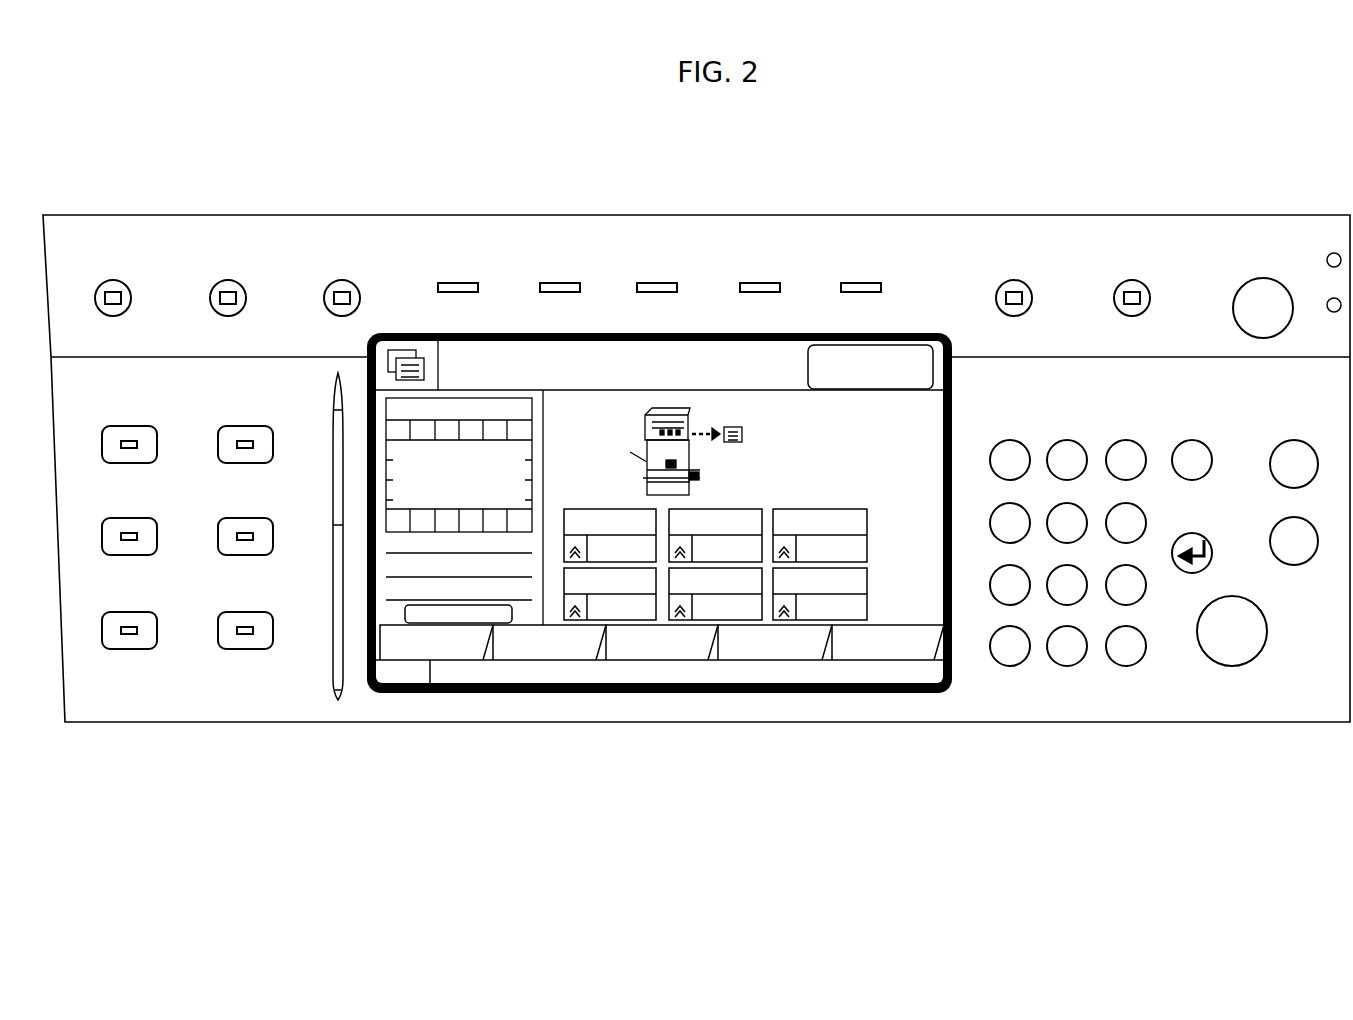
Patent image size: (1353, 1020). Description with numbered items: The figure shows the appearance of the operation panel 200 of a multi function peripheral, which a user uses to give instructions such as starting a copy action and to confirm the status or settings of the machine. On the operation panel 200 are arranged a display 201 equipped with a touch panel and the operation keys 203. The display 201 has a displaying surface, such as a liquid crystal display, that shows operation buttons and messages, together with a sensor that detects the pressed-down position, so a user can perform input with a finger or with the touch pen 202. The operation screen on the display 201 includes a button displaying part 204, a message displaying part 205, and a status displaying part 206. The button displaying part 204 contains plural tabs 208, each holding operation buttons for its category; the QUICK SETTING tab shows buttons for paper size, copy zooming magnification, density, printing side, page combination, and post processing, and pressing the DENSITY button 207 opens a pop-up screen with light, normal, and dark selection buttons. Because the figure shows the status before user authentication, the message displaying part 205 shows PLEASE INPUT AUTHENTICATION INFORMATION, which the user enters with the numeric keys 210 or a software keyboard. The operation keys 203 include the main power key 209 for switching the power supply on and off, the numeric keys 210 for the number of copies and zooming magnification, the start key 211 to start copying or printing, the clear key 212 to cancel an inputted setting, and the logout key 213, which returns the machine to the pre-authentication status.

The operation panel 200 is at (962, 182).
The display 201 is at (670, 483).
The touch pen 202 is at (338, 700).
The operation key 203 is at (288, 745).
The button displaying part 204 is at (598, 622).
The message displaying part 205 is at (795, 350).
The status displaying part 206 is at (437, 683).
The DENSITY button 207 is at (860, 552).
The tab 208 is at (697, 652).
The main power key 209 is at (1283, 303).
The numeric keys 210 is at (1073, 683).
The start key 211 is at (1252, 650).
The clear key 212 is at (1198, 478).
The logout key 213 is at (1150, 300).